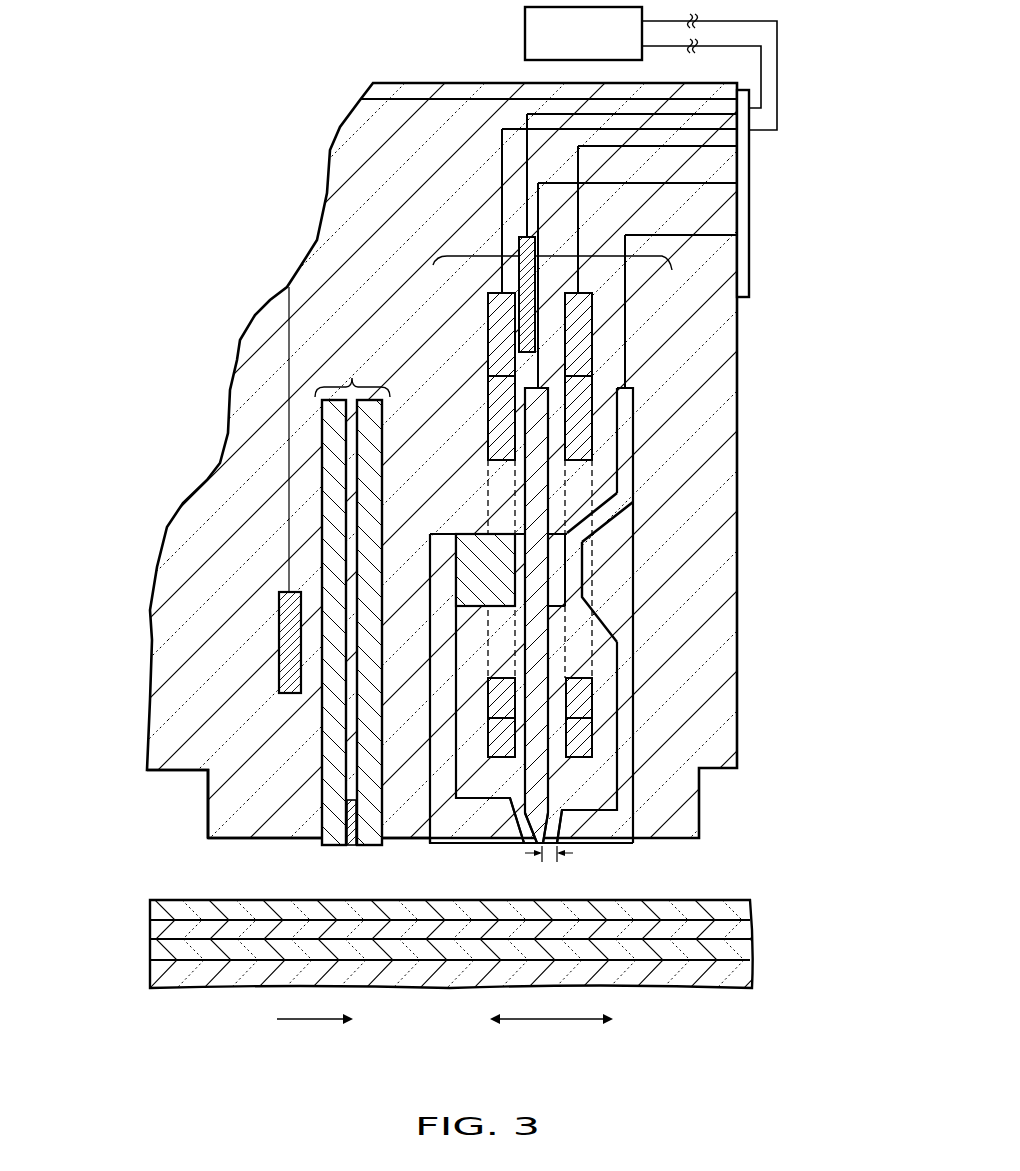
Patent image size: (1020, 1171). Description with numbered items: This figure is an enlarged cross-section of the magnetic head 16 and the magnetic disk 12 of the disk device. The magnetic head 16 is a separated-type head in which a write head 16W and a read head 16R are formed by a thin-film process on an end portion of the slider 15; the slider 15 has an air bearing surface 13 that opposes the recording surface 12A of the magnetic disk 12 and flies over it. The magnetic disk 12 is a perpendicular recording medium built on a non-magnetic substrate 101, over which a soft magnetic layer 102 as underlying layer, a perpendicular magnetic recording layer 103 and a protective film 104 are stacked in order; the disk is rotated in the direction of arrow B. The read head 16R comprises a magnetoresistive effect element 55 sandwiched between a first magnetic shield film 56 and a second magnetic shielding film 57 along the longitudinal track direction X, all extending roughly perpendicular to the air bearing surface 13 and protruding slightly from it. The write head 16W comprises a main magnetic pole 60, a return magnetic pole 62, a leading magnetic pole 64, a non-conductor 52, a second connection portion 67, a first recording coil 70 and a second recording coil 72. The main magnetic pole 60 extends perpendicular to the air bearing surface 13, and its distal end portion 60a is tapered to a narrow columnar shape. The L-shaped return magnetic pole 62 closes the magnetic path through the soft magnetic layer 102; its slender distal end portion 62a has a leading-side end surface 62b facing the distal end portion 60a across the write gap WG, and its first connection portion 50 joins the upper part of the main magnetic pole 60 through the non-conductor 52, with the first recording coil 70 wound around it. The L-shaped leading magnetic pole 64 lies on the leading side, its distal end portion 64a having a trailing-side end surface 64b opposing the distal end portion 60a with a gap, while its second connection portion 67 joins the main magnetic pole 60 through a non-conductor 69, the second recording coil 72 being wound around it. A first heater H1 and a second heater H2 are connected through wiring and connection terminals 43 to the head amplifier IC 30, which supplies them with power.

The magnetic head 16 is at (276, 207).
The head amplifier IC 30 is at (525, 33).
The connection terminals 43 is at (750, 226).
The write head 16W is at (560, 256).
The read head 16R is at (242, 597).
The first heater H1 is at (519, 277).
The second heater H2 is at (282, 637).
The second recording coil 72 is at (503, 410).
The first recording coil 70 is at (585, 397).
The second magnetic shielding film 57 is at (365, 505).
The first magnetic shield film 56 is at (330, 553).
The second connection portion 67 is at (480, 543).
The non-conductor 69 is at (512, 577).
The non-conductor 52 is at (565, 558).
The first connection portion 50 is at (573, 590).
The return magnetic pole 62 is at (652, 648).
The leading magnetic pole 64 is at (442, 648).
The slider 15 is at (178, 696).
The air bearing surface 13 is at (170, 772).
The magnetoresistive effect element 55 is at (347, 820).
The main magnetic pole 60 is at (538, 782).
The trailing-side end surface 64b is at (430, 843).
The distal end portion 64a is at (456, 843).
The distal end portion 60a is at (528, 830).
The write gap WG is at (557, 860).
The distal end portion 62a is at (595, 845).
The leading-side end surface 62b is at (595, 832).
The protective film 104 is at (742, 907).
The perpendicular magnetic recording layer 103 is at (742, 929).
The soft magnetic layer 102 is at (742, 950).
The substrate 101 is at (742, 972).
The recording surface 12A is at (717, 948).
The magnetic disk 12 is at (481, 978).
The rotation direction arrow B is at (315, 1033).
The longitudinal direction of recording track X is at (551, 1033).